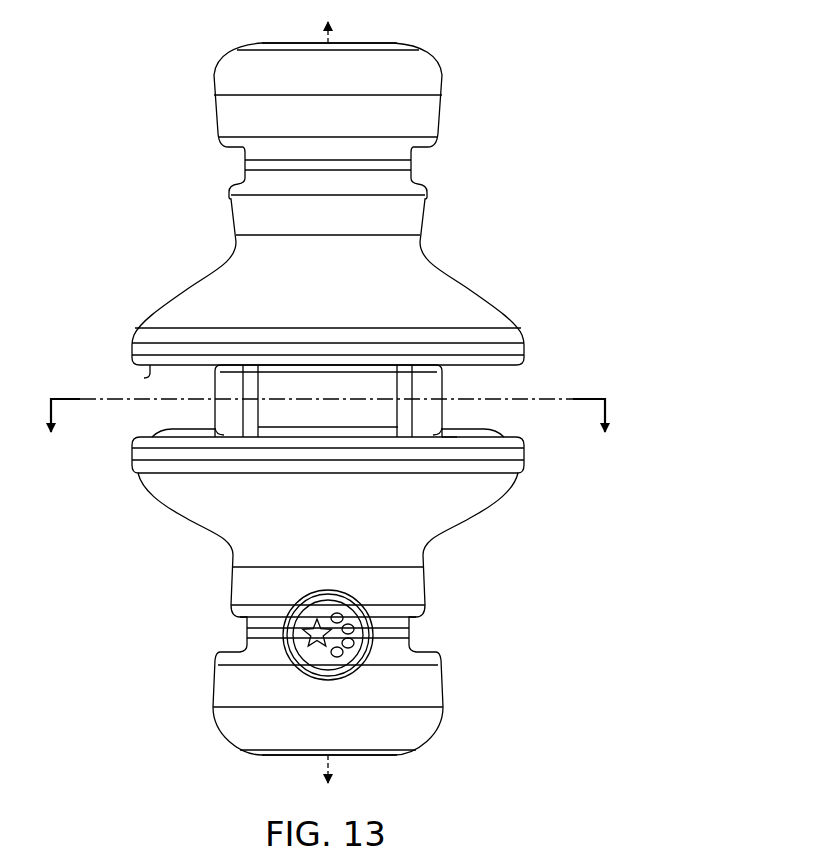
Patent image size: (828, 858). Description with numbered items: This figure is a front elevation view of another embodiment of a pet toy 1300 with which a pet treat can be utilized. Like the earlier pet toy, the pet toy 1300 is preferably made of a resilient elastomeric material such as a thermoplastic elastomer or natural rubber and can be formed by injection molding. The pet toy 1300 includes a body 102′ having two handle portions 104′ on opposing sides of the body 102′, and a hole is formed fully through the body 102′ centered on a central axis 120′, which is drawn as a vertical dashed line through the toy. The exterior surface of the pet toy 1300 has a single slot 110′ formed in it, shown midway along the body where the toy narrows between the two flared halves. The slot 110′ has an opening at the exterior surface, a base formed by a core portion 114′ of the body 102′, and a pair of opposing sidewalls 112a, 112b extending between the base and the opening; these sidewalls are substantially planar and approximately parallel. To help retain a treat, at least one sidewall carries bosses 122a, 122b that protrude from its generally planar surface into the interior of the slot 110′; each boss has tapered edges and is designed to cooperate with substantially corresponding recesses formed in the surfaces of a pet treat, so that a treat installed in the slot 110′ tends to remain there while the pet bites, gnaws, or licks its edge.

The pet toy 1300 is at (372, 396).
The body 102′ is at (465, 291).
The handle portions 104′ is at (214, 111).
The slot 110′ is at (337, 414).
The core portion 114′ is at (330, 413).
The sidewall 112a is at (144, 378).
The sidewall 112b is at (474, 430).
The boss 122a is at (182, 430).
The boss 122b is at (457, 437).
The central axis 120′ is at (332, 37).